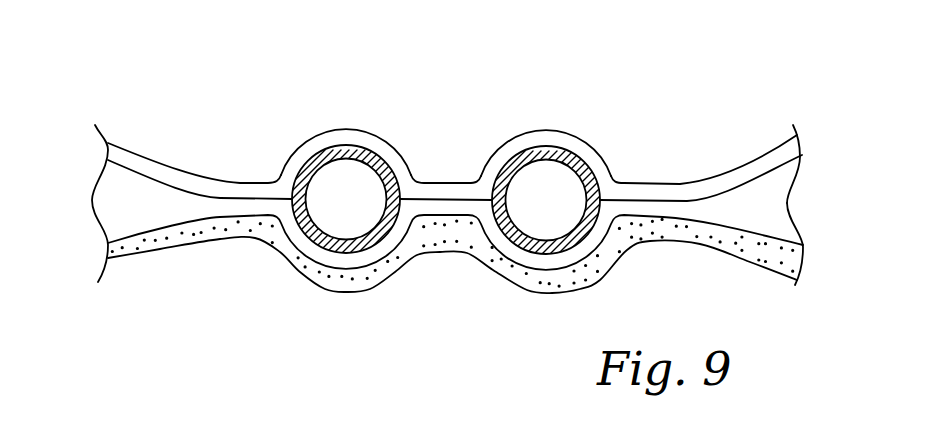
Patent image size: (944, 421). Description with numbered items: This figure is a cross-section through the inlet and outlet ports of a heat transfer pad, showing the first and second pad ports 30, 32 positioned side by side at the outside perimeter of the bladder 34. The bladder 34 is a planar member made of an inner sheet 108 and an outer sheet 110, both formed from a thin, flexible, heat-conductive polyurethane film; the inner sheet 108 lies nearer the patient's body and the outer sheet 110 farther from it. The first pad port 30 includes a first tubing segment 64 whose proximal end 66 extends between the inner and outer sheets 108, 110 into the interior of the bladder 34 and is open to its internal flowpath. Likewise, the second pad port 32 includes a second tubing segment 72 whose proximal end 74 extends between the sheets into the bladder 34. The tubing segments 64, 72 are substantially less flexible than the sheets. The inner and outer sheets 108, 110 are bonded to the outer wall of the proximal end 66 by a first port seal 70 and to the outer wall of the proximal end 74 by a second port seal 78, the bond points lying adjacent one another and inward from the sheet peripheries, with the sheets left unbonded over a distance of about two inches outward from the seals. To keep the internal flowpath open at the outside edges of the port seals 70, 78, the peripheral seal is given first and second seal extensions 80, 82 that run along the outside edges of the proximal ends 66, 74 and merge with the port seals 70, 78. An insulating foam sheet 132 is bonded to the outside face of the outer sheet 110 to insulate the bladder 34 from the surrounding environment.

The first pad port 30 is at (540, 142).
The second pad port 32 is at (357, 143).
The bladder 34 is at (126, 157).
The first tubing segment 64 is at (557, 142).
The proximal end of first tubing segment 66 is at (583, 152).
The first port seal 70 is at (549, 143).
The second tubing segment 72 is at (333, 143).
The proximal end of second tubing segment 74 is at (320, 153).
The second port seal 78 is at (383, 143).
The first seal extension 80 is at (642, 183).
The second seal extension 82 is at (255, 182).
The inner sheet 108 is at (797, 140).
The outer sheet 110 is at (800, 252).
The insulating foam sheet 132 is at (302, 263).